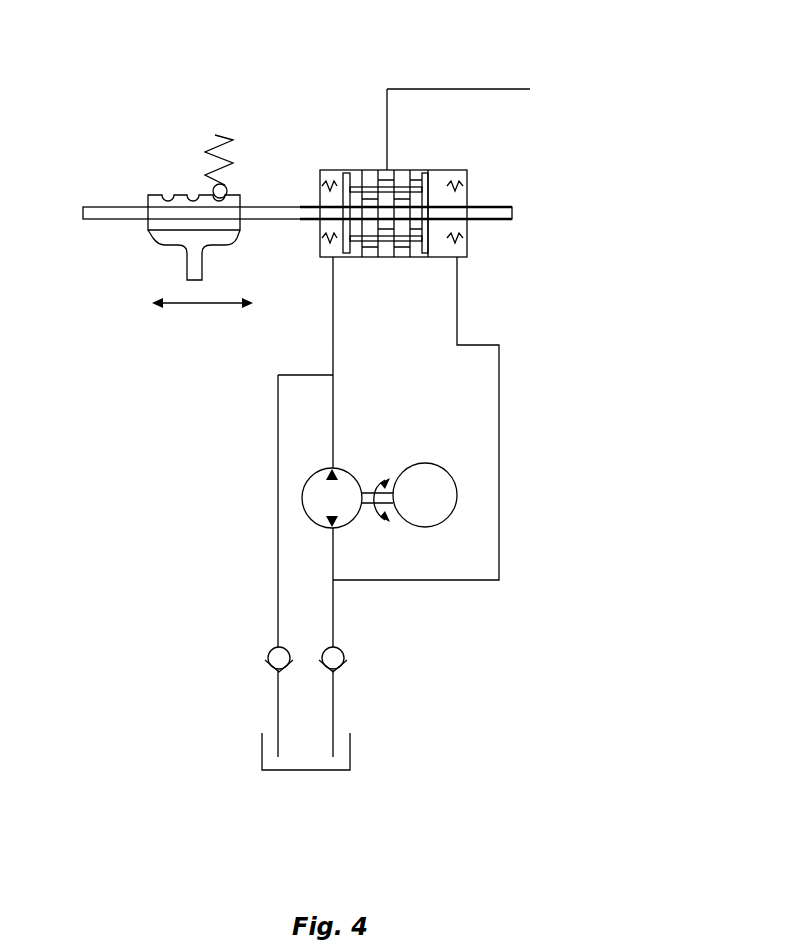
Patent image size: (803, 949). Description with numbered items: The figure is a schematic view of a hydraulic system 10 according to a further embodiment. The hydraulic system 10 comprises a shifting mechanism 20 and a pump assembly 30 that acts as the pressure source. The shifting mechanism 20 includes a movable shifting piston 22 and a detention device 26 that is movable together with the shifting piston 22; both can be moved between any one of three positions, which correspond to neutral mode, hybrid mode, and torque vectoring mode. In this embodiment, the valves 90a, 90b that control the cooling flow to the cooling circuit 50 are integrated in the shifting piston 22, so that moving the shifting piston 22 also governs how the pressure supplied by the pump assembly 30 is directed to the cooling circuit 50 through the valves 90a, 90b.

The hydraulic system 10 is at (306, 100).
The shifting mechanism 20 is at (285, 167).
The shifting piston 22 is at (497, 203).
The detention device 26 is at (148, 224).
The pump assembly 30 is at (403, 450).
The cooling circuit 50 is at (520, 89).
The valve 90a is at (402, 181).
The valve 90b is at (392, 238).